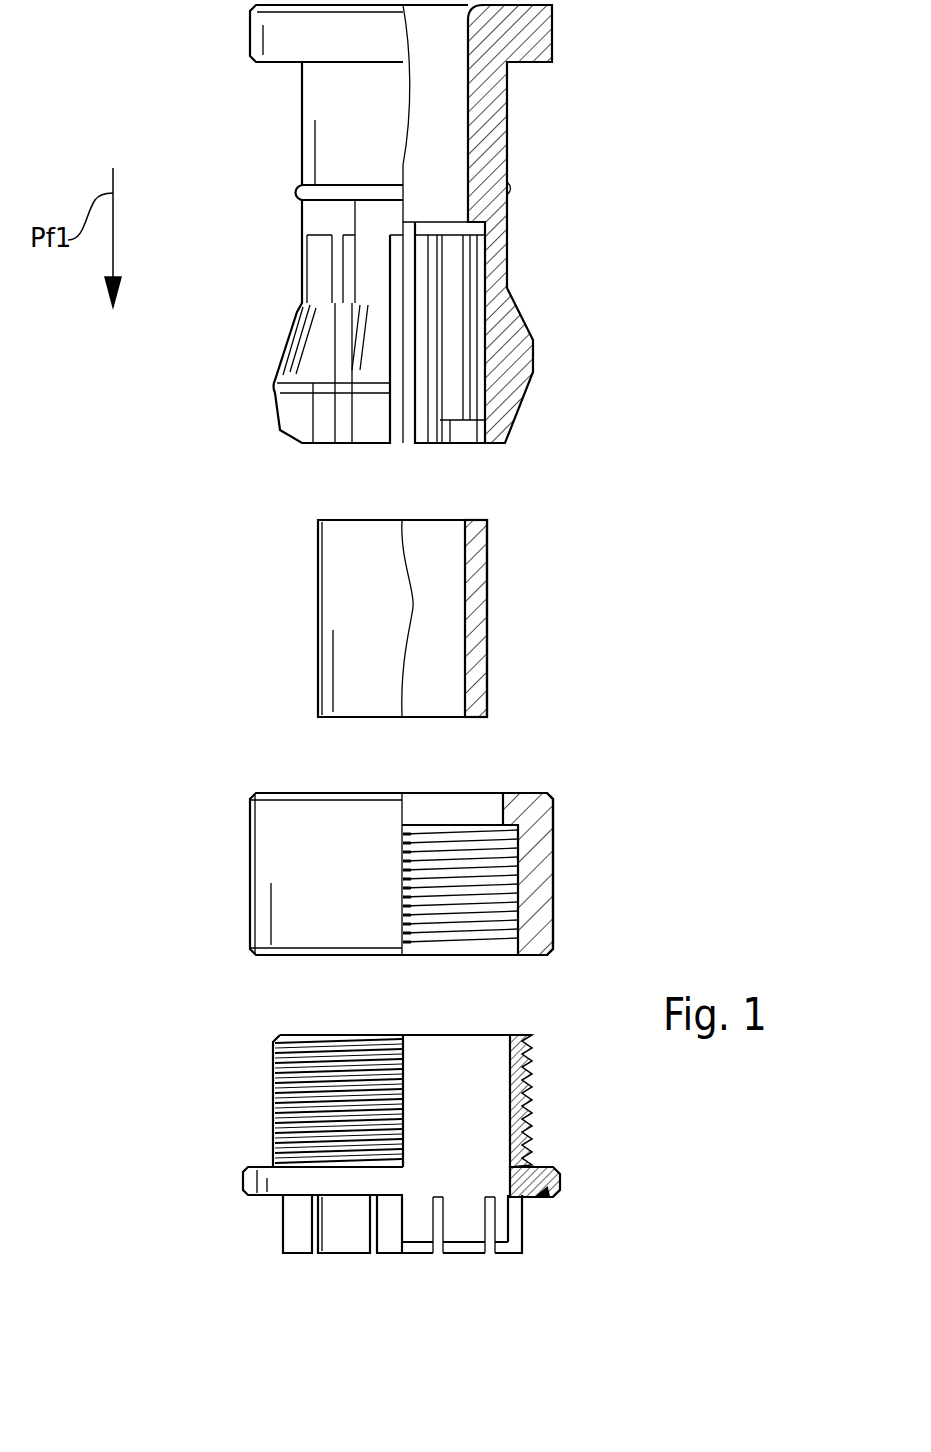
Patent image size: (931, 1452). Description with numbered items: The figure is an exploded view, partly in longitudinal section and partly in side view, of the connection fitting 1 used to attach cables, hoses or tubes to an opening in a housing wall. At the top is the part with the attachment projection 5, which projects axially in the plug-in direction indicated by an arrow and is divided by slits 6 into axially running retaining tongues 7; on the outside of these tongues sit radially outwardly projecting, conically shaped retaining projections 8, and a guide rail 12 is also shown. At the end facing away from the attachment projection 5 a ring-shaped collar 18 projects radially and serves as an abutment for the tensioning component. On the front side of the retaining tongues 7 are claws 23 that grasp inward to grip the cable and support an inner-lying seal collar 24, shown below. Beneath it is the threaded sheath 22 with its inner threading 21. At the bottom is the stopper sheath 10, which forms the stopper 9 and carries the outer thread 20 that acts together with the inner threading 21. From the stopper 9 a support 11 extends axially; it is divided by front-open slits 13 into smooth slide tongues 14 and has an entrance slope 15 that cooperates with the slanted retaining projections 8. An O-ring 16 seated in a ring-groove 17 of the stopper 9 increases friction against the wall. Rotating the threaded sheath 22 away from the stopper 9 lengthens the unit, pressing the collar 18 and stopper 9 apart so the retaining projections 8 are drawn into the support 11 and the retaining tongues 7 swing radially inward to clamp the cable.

The connection fitting 1 is at (645, 282).
The attachment projection 5 is at (284, 430).
The slits 6 is at (343, 300).
The retaining tongues 7 is at (300, 413).
The retaining projections 8 is at (280, 375).
The stopper 9 is at (270, 1195).
The stopper sheath 10 is at (290, 1105).
The support 11 is at (283, 1238).
The guide rail 12 is at (285, 318).
The slits 13 is at (372, 1245).
The slide tongues 14 is at (390, 1217).
The entrance slope 15 is at (505, 1245).
The O-ring 16 is at (545, 1197).
The ring-groove 17 is at (560, 1183).
The collar 18 is at (535, 58).
The outer thread 20 is at (532, 1103).
The inner threading 21 is at (500, 912).
The threaded sheath 22 is at (555, 853).
The claws 23 is at (470, 430).
The seal collar 24 is at (473, 608).